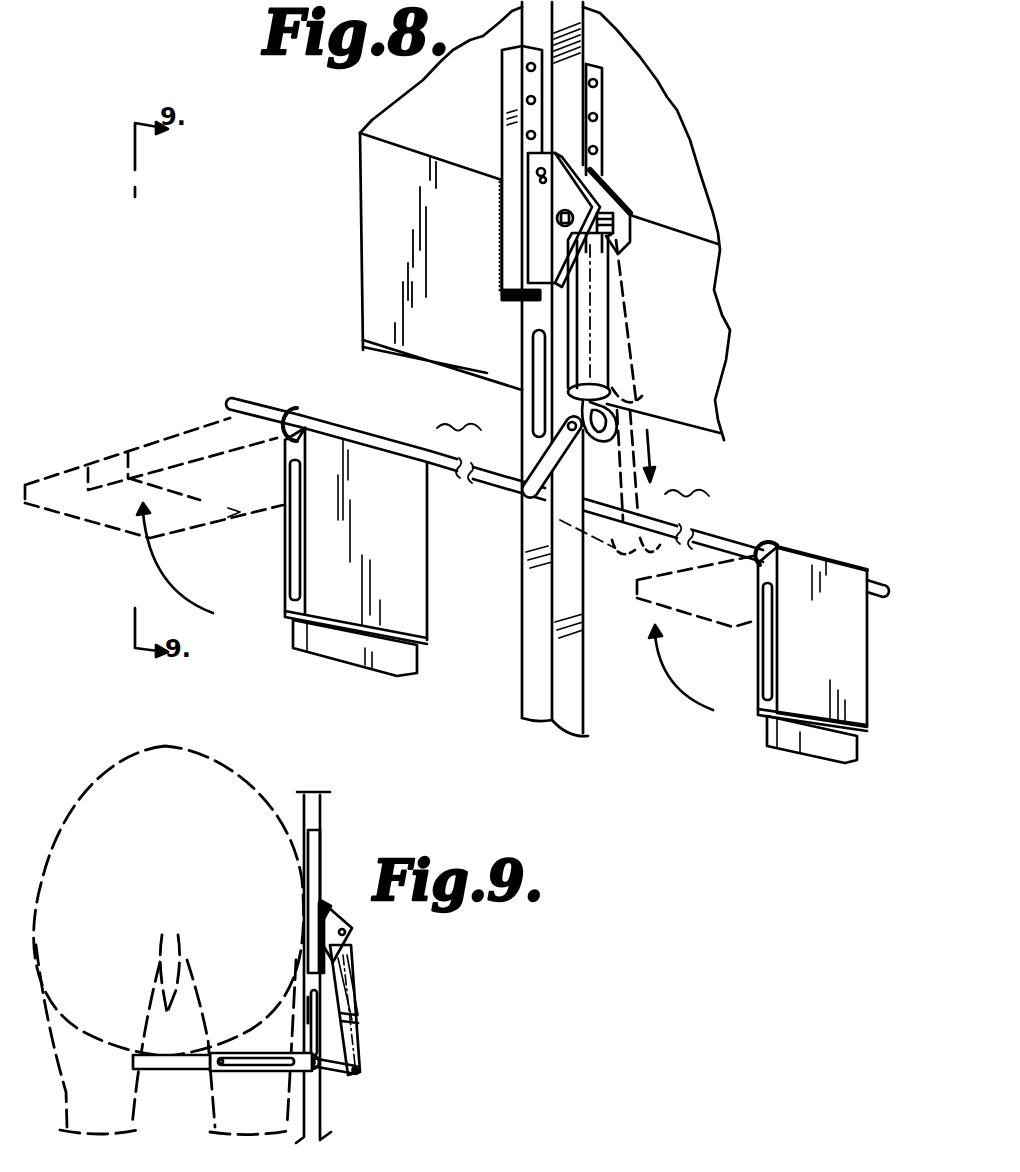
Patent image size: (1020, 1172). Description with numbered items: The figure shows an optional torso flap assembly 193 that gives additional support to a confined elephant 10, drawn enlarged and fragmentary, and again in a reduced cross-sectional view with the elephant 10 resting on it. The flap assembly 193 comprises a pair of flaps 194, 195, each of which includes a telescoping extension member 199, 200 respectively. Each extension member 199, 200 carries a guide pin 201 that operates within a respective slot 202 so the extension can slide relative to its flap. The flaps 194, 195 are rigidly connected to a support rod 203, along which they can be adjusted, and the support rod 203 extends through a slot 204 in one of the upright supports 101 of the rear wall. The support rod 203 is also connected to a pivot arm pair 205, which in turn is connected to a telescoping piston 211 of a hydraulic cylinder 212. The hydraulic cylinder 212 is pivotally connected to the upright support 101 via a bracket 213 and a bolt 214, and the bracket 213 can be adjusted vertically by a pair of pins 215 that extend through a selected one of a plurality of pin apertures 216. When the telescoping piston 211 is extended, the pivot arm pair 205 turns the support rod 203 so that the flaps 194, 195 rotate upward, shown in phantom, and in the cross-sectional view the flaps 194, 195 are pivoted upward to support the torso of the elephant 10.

In FIG. 9, the elephant 10 is at (177, 811).
In FIG. 8, the upright support 101 is at (578, 62).
In FIG. 8, the torso flap assembly 193 is at (318, 330).
In FIG. 8, the flap 194 is at (317, 526).
In FIG. 9, the flap 194 is at (262, 1072).
In FIG. 8, the flap 195 is at (819, 678).
In FIG. 8, the telescoping extension member 199 is at (362, 670).
In FIG. 9, the telescoping extension member 199 is at (172, 1070).
In FIG. 8, the telescoping extension member 200 is at (816, 760).
In FIG. 8, the guide pin 201 is at (287, 463).
In FIG. 8, the slot 202 is at (296, 544).
In FIG. 8, the support rod 203 is at (262, 403).
In FIG. 9, the support rod 203 is at (315, 1071).
In FIG. 8, the slot 204 is at (538, 392).
In FIG. 8, the pivot arm pair 205 is at (548, 466).
In FIG. 9, the pivot arm pair 205 is at (340, 1082).
In FIG. 9, the telescoping piston 211 is at (357, 1043).
In FIG. 8, the hydraulic cylinder 212 is at (603, 320).
In FIG. 9, the hydraulic cylinder 212 is at (358, 998).
In FIG. 8, the bracket 213 is at (600, 205).
In FIG. 9, the bracket 213 is at (346, 913).
In FIG. 8, the bolt 214 is at (557, 220).
In FIG. 8, the pin 215 is at (538, 170).
In FIG. 8, the pin aperture 216 is at (596, 150).